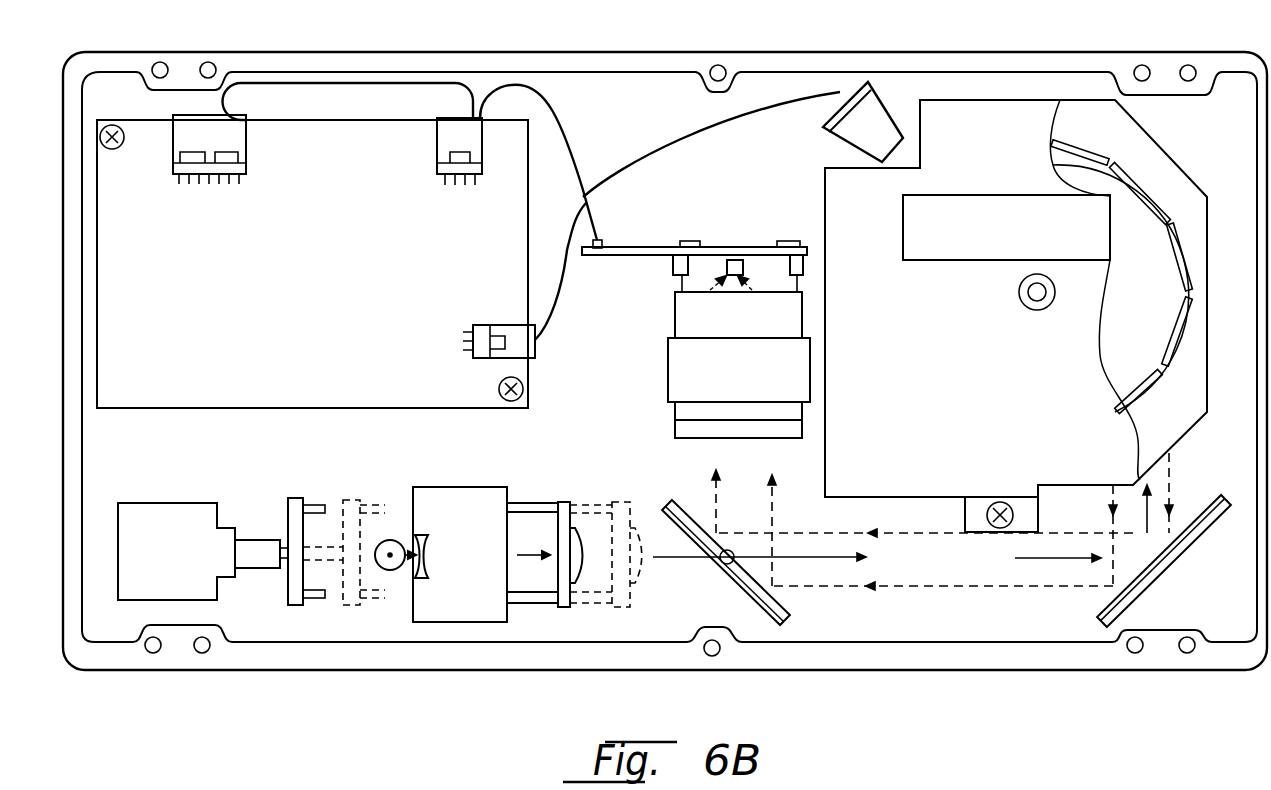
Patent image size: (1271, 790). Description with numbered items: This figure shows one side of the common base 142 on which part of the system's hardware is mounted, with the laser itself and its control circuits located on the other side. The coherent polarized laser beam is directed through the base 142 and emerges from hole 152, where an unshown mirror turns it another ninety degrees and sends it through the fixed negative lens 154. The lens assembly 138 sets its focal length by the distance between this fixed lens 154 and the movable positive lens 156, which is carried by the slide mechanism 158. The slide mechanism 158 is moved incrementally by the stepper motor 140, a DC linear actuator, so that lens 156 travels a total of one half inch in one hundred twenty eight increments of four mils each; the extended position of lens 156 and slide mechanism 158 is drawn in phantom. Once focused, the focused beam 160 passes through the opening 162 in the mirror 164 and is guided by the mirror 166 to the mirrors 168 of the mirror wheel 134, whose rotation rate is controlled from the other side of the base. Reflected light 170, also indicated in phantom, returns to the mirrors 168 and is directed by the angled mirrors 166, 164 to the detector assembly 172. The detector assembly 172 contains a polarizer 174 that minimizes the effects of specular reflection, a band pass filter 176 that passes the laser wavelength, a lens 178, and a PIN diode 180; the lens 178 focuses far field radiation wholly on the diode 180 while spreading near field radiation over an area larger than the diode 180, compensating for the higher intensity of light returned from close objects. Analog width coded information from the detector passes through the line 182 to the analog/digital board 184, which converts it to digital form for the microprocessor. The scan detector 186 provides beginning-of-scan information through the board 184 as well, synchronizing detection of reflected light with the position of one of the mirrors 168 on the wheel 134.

The mirror wheel 134 is at (1152, 287).
The lens assembly 138 is at (535, 486).
The stepper motor 140 is at (152, 503).
The base 142 is at (740, 52).
The hole 152 is at (392, 572).
The negative lens 154 is at (423, 537).
The positive lens 156 is at (574, 540).
The slide mechanism 158 is at (316, 608).
The focused beam 160 is at (688, 558).
The opening 162 is at (727, 566).
The mirror 164 is at (757, 605).
The mirror 166 is at (1172, 570).
The mirrors 168 is at (1185, 374).
The reflected light 170 is at (710, 500).
The detector assembly 172 is at (652, 355).
The polarizer 174 is at (802, 432).
The band pass filter 176 is at (802, 415).
The lens 178 is at (802, 325).
The PIN diode 180 is at (745, 262).
The line 182 is at (572, 130).
The analog/digital board 184 is at (336, 309).
The scan detector 186 is at (838, 143).